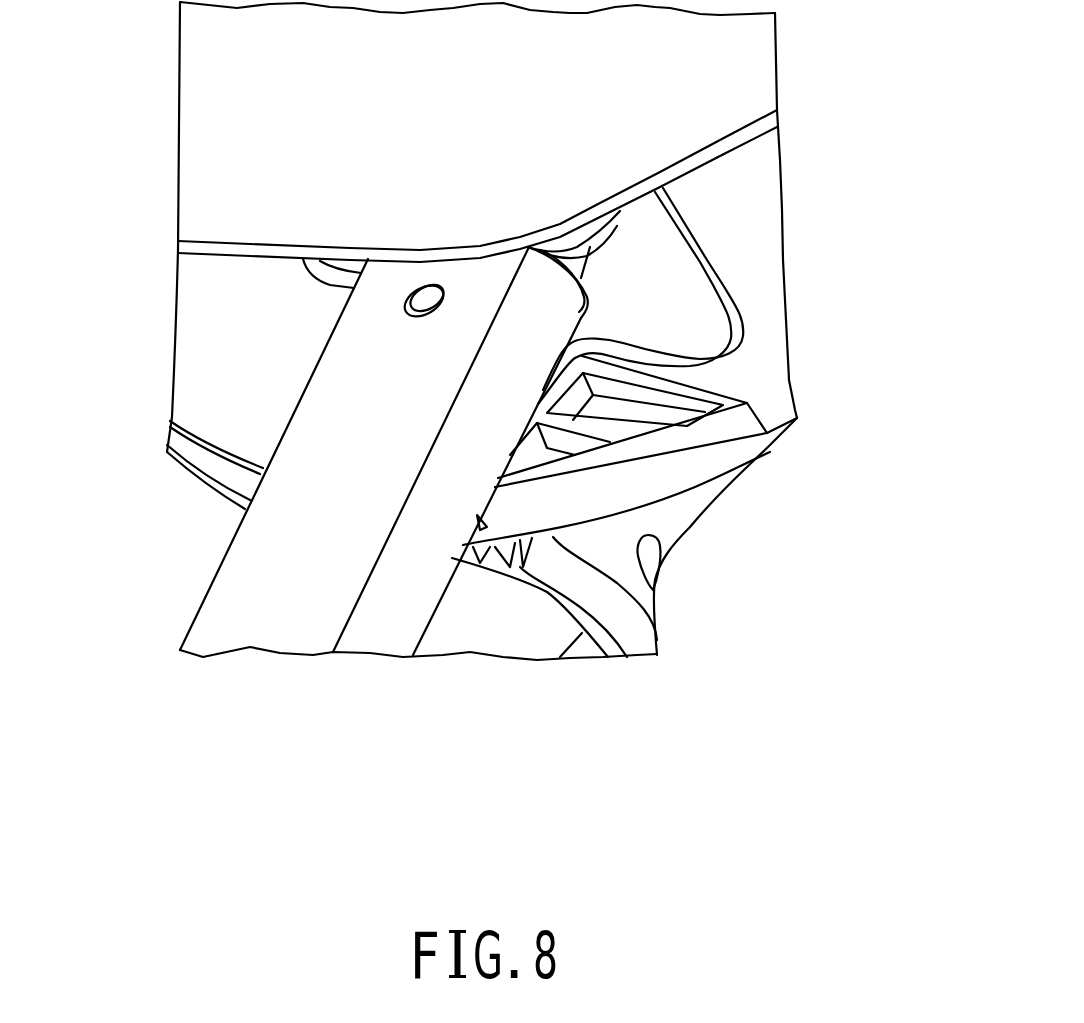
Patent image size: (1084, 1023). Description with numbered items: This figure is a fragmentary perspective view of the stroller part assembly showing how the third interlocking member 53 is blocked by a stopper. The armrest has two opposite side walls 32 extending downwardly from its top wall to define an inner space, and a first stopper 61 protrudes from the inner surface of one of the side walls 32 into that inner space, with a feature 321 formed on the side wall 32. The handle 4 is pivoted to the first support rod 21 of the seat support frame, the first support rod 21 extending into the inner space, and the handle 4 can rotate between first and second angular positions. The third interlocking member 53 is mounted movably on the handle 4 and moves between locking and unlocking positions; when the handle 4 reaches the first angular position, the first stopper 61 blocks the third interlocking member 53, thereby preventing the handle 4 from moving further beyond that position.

The side wall 32 is at (716, 78).
The slot 321 is at (679, 275).
The first stopper 61 is at (656, 470).
The third interlocking member 53 is at (666, 571).
The handle 4 is at (495, 624).
The first support rod 21 is at (258, 594).